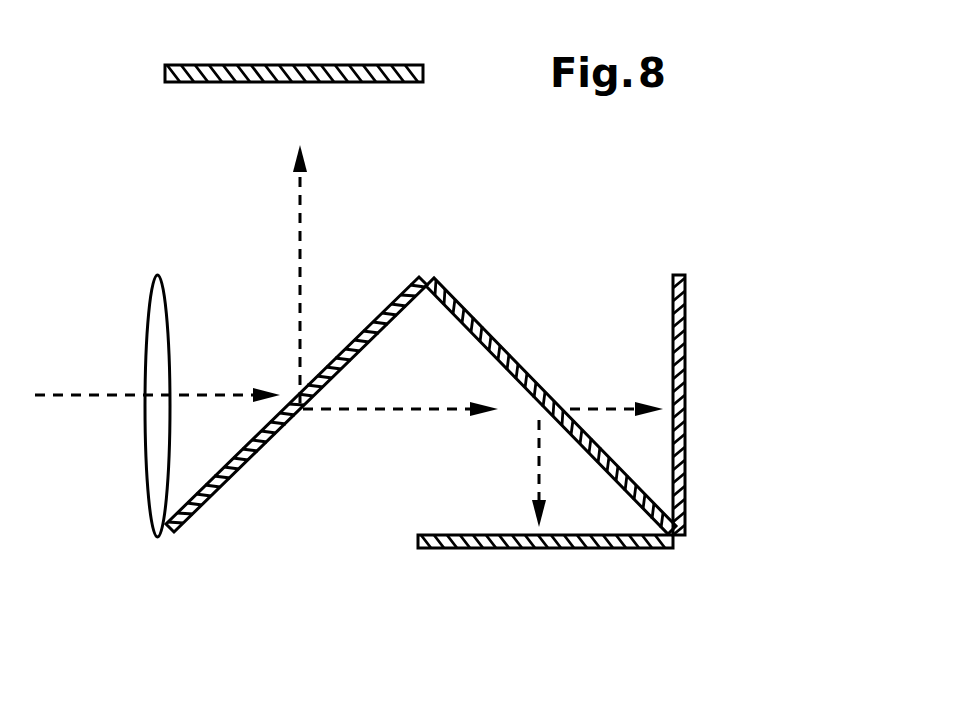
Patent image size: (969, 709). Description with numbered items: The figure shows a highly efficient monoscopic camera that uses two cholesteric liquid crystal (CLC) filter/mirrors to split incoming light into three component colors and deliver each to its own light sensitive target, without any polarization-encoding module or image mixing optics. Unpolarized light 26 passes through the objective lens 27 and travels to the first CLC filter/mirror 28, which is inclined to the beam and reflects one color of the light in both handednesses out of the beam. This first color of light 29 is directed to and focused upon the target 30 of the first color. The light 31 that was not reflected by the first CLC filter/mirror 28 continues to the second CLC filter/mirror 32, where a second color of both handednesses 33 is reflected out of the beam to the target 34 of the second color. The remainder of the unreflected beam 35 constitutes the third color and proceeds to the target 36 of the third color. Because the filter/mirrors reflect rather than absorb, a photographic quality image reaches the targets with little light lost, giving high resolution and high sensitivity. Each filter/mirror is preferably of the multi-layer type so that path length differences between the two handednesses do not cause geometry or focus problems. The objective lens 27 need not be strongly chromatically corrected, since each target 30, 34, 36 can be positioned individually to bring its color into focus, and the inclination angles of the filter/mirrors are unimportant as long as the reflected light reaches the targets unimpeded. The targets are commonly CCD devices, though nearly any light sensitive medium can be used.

The unpolarized light 26 is at (115, 395).
The objective lens 27 is at (147, 348).
The first CLC filter/mirror 28 is at (237, 453).
The first color of light 29 is at (300, 253).
The target of the first color 30 is at (390, 80).
The light not reflected by the first CLC filter/mirror 31 is at (450, 407).
The second CLC filter/mirror 32 is at (507, 363).
The second color of light 33 is at (540, 468).
The target of the second color 34 is at (498, 547).
The remainder of the unreflected beam 35 is at (607, 407).
The target of the third color 36 is at (685, 418).